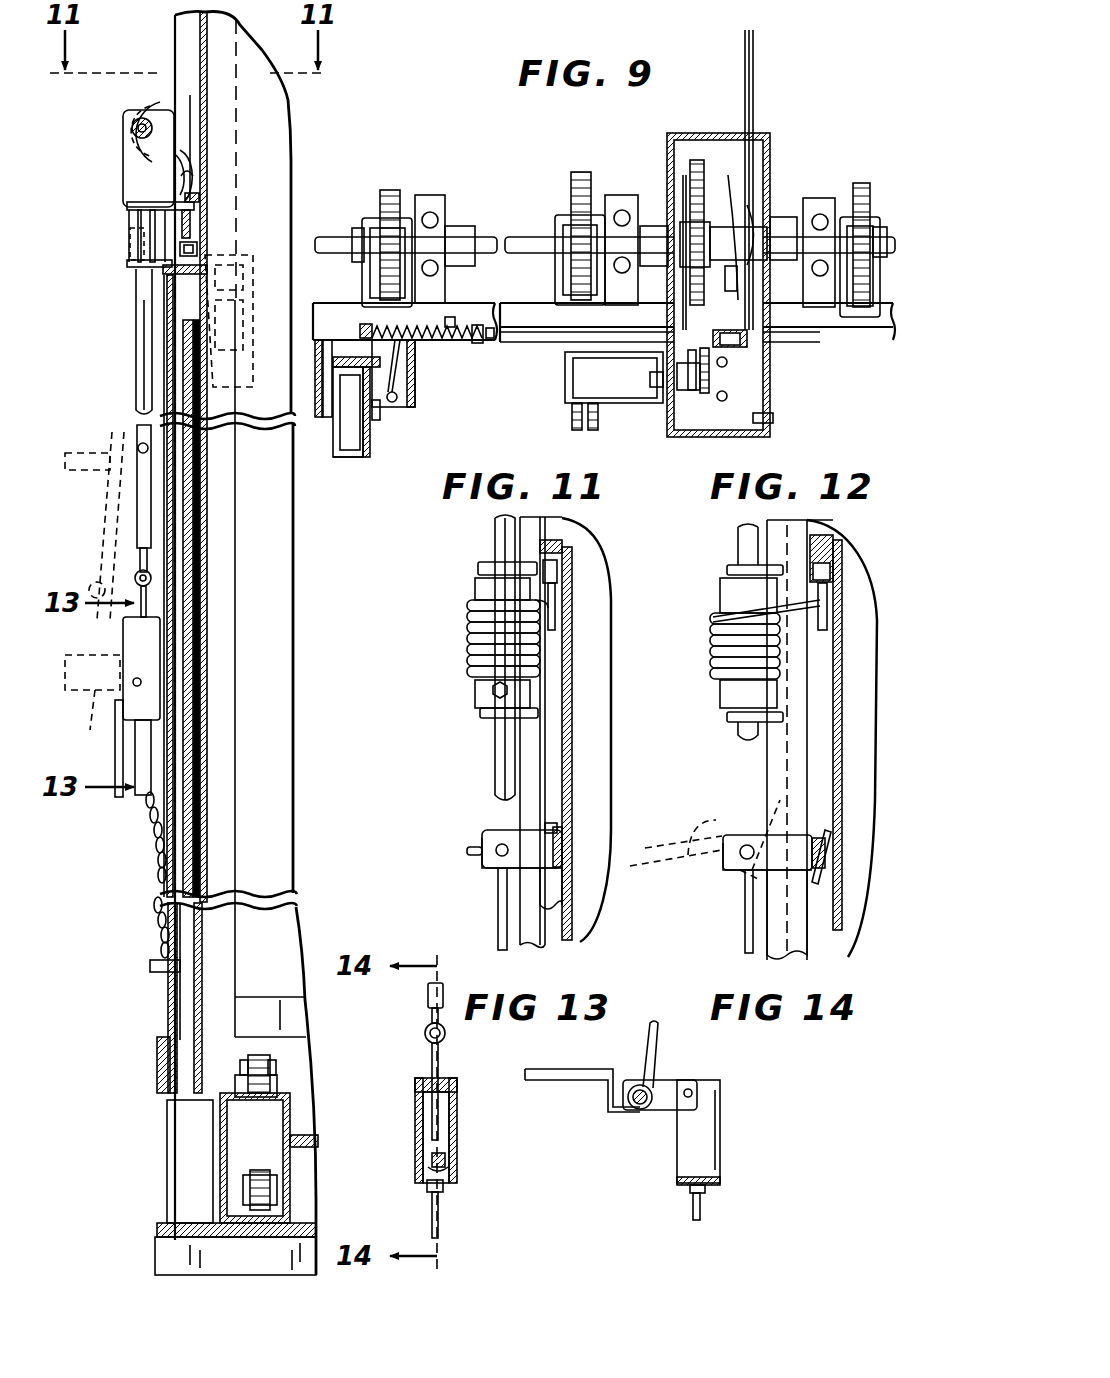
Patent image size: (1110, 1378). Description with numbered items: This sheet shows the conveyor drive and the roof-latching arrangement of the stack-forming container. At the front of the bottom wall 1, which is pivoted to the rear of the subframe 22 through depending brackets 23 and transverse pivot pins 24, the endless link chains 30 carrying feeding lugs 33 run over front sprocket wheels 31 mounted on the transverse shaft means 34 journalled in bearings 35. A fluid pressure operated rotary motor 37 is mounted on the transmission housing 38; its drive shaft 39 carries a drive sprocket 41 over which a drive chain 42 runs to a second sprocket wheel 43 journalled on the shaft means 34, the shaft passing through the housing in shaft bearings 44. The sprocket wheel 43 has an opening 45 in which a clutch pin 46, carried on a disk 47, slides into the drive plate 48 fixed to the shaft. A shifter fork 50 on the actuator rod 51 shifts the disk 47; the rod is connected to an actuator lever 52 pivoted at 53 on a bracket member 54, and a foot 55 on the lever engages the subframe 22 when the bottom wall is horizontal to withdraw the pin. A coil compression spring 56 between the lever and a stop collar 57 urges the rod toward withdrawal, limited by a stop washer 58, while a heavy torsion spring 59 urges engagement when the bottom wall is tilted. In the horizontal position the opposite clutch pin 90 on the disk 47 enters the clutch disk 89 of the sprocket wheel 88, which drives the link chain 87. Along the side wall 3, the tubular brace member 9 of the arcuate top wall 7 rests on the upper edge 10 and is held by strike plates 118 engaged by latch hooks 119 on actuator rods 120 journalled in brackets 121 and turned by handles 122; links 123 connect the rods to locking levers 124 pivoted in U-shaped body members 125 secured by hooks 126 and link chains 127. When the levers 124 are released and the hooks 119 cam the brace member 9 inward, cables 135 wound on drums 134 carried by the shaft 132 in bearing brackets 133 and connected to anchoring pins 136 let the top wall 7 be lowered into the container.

In FIG. 10, the bottom wall 1 is at (294, 1121).
In FIG. 11, the bottom wall 1 is at (594, 666).
In FIG. 12, the bottom wall 1 is at (876, 613).
In FIG. 10, the side wall 3 is at (196, 530).
In FIG. 11, the side wall 3 is at (572, 940).
In FIG. 12, the side wall 3 is at (812, 946).
In FIG. 10, the top wall 7 is at (173, 22).
In FIG. 11, the top wall 7 is at (574, 746).
In FIG. 12, the top wall 7 is at (846, 753).
In FIG. 10, the tubular brace member 9 is at (200, 240).
In FIG. 11, the tubular brace member 9 is at (562, 896).
In FIG. 12, the tubular brace member 9 is at (812, 916).
In FIG. 10, the upper edge 10 is at (205, 262).
In FIG. 11, the upper edge 10 is at (550, 946).
In FIG. 12, the upper edge 10 is at (795, 946).
In FIG. 9, the subframe 22 is at (352, 460).
In FIG. 9, the depending brackets 23 is at (335, 450).
In FIG. 9, the transverse pivot pins 24 is at (326, 418).
In FIG. 10, the endless link chains 30 is at (276, 1085).
In FIG. 9, the endless link chains 30 is at (372, 263).
In FIG. 9, the front sprocket wheels 31 is at (360, 232).
In FIG. 10, the feeding lugs 33 is at (246, 1066).
In FIG. 9, the feeding lugs 33 is at (398, 190).
In FIG. 9, the shaft means 34 is at (466, 240).
In FIG. 9, the bearings 35 is at (440, 208).
In FIG. 9, the rotary motor 37 is at (577, 372).
In FIG. 9, the transmission housing 38 is at (672, 140).
In FIG. 9, the drive shaft 39 is at (707, 375).
In FIG. 9, the drive sprocket 41 is at (685, 390).
In FIG. 9, the drive chain 42 is at (687, 303).
In FIG. 9, the second sprocket wheel 43 is at (703, 220).
In FIG. 9, the shaft bearings 44 is at (630, 292).
In FIG. 9, the opening 45 is at (700, 300).
In FIG. 9, the clutch pin 46 is at (745, 322).
In FIG. 9, the disk 47 is at (728, 176).
In FIG. 9, the drive plate 48 is at (682, 177).
In FIG. 9, the shifter fork 50 is at (732, 350).
In FIG. 9, the actuator rod 51 is at (492, 340).
In FIG. 9, the actuator lever 52 is at (378, 412).
In FIG. 9, the pivot 53 is at (392, 403).
In FIG. 9, the bracket member 54 is at (398, 400).
In FIG. 9, the foot 55 is at (340, 352).
In FIG. 9, the coil compression spring 56 is at (450, 328).
In FIG. 9, the stop collar 57 is at (478, 343).
In FIG. 9, the stop washer 58 is at (372, 328).
In FIG. 9, the torsion spring 59 is at (410, 385).
In FIG. 9, the link chain 87 is at (755, 110).
In FIG. 9, the sprocket wheel 88 is at (752, 262).
In FIG. 9, the clutch disk 89 is at (748, 218).
In FIG. 9, the clutch pin 90 is at (738, 282).
In FIG. 10, the strike plates 118 is at (160, 219).
In FIG. 11, the strike plates 118 is at (557, 824).
In FIG. 12, the strike plates 118 is at (822, 874).
In FIG. 10, the latch hooks 119 is at (128, 202).
In FIG. 11, the latch hooks 119 is at (563, 846).
In FIG. 12, the latch hooks 119 is at (738, 876).
In FIG. 10, the actuator rods 120 is at (147, 382).
In FIG. 11, the actuator rods 120 is at (497, 856).
In FIG. 12, the actuator rods 120 is at (718, 835).
In FIG. 13, the actuator rods 120 is at (428, 994).
In FIG. 10, the brackets 121 is at (128, 266).
In FIG. 11, the brackets 121 is at (492, 870).
In FIG. 12, the brackets 121 is at (722, 866).
In FIG. 10, the handle 122 is at (139, 447).
In FIG. 11, the handle 122 is at (497, 928).
In FIG. 12, the handle 122 is at (642, 868).
In FIG. 10, the links 123 is at (141, 560).
In FIG. 13, the links 123 is at (430, 1041).
In FIG. 14, the links 123 is at (656, 1038).
In FIG. 10, the locking levers 124 is at (118, 720).
In FIG. 11, the locking levers 124 is at (467, 849).
In FIG. 13, the locking levers 124 is at (448, 1155).
In FIG. 14, the locking levers 124 is at (614, 1112).
In FIG. 10, the body members 125 is at (122, 641).
In FIG. 13, the body members 125 is at (458, 1118).
In FIG. 14, the body members 125 is at (720, 1146).
In FIG. 10, the hooks 126 is at (148, 812).
In FIG. 13, the hooks 126 is at (440, 1217).
In FIG. 14, the hooks 126 is at (692, 1208).
In FIG. 10, the link chains 127 is at (163, 906).
In FIG. 10, the shaft 132 is at (133, 134).
In FIG. 10, the bearing brackets 133 is at (160, 126).
In FIG. 11, the bearing brackets 133 is at (478, 567).
In FIG. 12, the bearing brackets 133 is at (727, 567).
In FIG. 10, the drums 134 is at (134, 101).
In FIG. 11, the drums 134 is at (475, 588).
In FIG. 12, the drums 134 is at (720, 594).
In FIG. 10, the cables 135 is at (112, 126).
In FIG. 11, the cables 135 is at (470, 650).
In FIG. 12, the cables 135 is at (712, 635).
In FIG. 10, the anchoring pins 136 is at (200, 198).
In FIG. 11, the anchoring pins 136 is at (557, 616).
In FIG. 12, the anchoring pins 136 is at (826, 596).